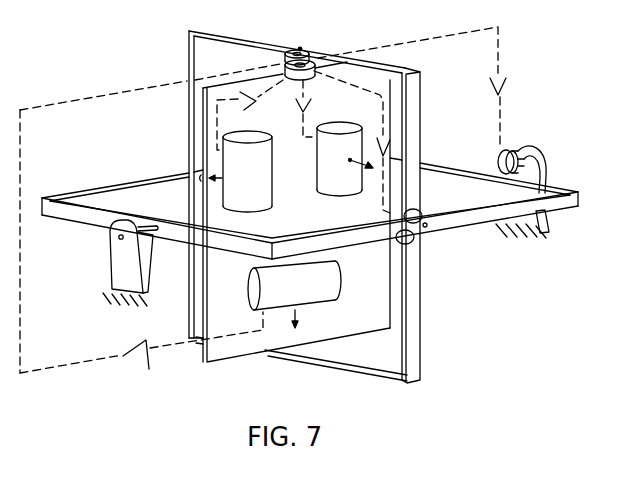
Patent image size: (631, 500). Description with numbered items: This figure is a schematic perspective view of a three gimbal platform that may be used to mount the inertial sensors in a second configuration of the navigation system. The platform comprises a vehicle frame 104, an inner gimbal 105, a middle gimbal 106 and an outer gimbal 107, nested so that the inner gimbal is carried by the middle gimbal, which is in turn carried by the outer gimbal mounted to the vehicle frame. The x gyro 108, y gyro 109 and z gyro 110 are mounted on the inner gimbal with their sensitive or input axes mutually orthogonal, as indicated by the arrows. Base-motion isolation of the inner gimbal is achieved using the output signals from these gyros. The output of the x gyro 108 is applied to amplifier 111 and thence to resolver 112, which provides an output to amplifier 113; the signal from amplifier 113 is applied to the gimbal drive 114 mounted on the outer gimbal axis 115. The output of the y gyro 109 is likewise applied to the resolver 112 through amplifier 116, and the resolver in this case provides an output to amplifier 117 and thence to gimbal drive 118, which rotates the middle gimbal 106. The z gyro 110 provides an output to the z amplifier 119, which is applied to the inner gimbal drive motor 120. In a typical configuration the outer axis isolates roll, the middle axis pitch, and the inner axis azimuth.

The vehicle frame 104 is at (549, 224).
The inner gimbal 105 is at (254, 348).
The middle gimbal 106 is at (419, 356).
The outer gimbal 107 is at (470, 223).
The x gyro 108 is at (263, 201).
The y gyro 109 is at (318, 161).
The z gyro 110 is at (321, 299).
The amplifier 111 is at (250, 115).
The resolver 112 is at (284, 60).
The amplifier 113 is at (510, 79).
The gimbal drive 114 is at (514, 151).
The outer gimbal axis 115 is at (544, 165).
The amplifier 116 is at (320, 108).
The amplifier 117 is at (386, 142).
The gimbal drive 118 is at (402, 242).
The z amplifier 119 is at (192, 358).
The inner gimbal drive motor 120 is at (303, 50).